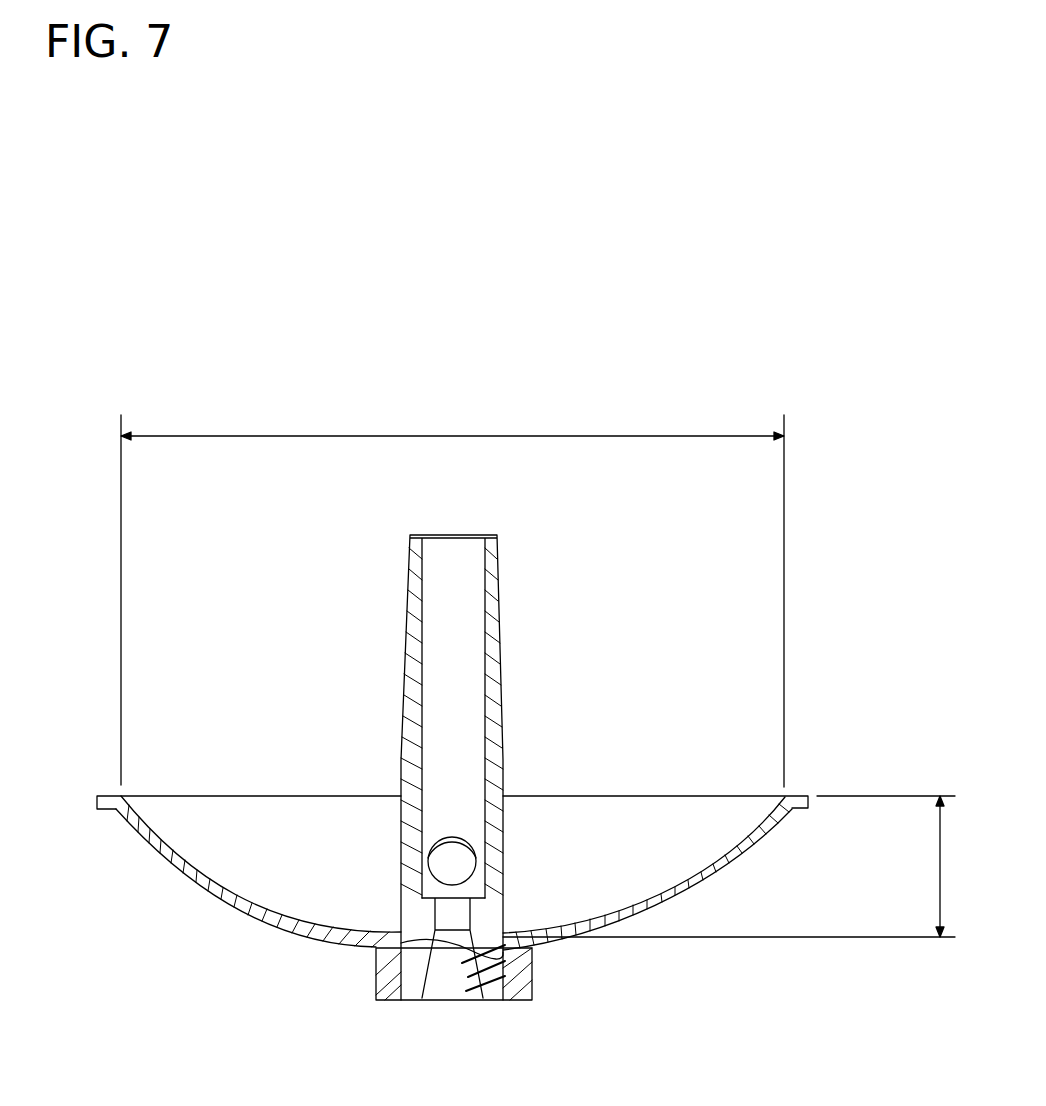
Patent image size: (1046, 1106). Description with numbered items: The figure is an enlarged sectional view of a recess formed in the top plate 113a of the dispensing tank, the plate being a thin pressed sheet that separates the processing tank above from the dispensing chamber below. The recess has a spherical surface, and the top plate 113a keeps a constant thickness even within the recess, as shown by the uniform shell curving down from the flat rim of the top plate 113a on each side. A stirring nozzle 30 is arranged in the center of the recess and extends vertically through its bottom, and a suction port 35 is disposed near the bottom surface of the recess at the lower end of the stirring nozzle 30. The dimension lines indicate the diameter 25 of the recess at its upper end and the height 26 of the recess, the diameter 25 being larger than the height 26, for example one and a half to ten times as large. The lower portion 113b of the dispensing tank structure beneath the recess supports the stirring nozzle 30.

The diameter 25 is at (452, 596).
The height 26 is at (938, 888).
The stirring nozzle 30 is at (498, 577).
The suction port 35 is at (400, 838).
The top plate 113a is at (800, 790).
The bottom portion 113b is at (380, 962).